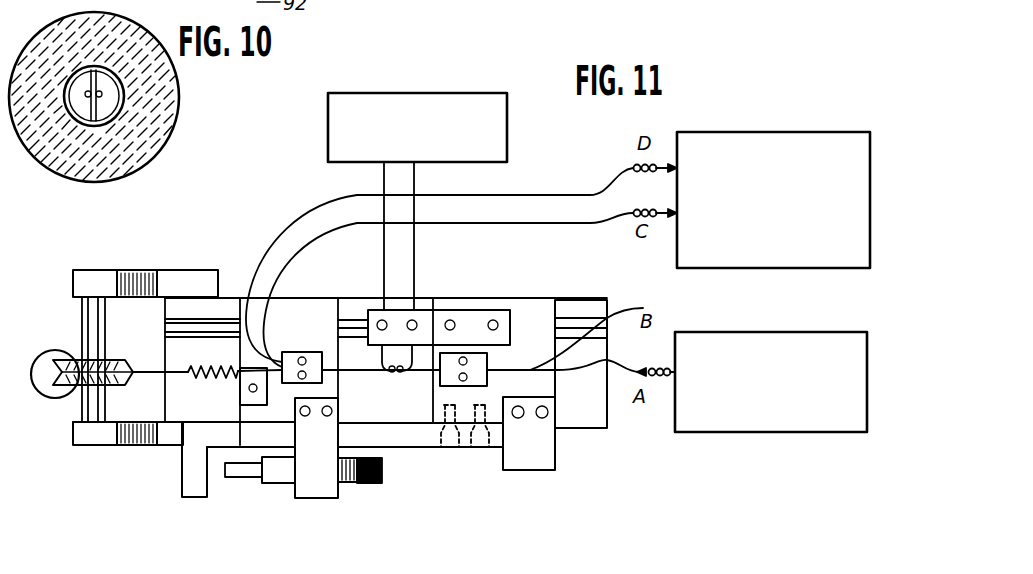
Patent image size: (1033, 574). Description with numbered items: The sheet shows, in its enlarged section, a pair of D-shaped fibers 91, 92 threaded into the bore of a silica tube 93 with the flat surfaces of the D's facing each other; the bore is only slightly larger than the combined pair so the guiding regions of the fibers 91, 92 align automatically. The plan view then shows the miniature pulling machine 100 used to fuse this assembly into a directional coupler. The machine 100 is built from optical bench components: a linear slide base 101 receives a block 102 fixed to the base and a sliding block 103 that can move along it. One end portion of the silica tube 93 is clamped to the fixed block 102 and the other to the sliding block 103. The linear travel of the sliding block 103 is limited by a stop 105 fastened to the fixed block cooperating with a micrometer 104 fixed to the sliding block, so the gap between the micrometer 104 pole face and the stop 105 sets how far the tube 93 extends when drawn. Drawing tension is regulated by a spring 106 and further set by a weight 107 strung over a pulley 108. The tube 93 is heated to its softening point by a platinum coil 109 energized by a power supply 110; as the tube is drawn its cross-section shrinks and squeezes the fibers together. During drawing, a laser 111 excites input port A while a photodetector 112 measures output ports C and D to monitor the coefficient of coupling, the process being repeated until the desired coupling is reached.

In FIG. 10, the fiber 91 is at (112, 100).
In FIG. 10, the fiber 92 is at (82, 110).
In FIG. 10, the silica tube 93 is at (167, 100).
In FIG. 11, the silica tube 93 is at (367, 372).
In FIG. 11, the miniature pulling machine 100 is at (552, 487).
In FIG. 11, the linear slide base 101 is at (610, 280).
In FIG. 11, the block 102 is at (537, 307).
In FIG. 11, the sliding block 103 is at (323, 312).
In FIG. 11, the micrometer 104 is at (285, 483).
In FIG. 11, the stop 105 is at (210, 487).
In FIG. 11, the spring 106 is at (203, 375).
In FIG. 11, the weight 107 is at (42, 394).
In FIG. 11, the pulley 108 is at (93, 363).
In FIG. 11, the platinum coil 109 is at (427, 300).
In FIG. 11, the power supply 110 is at (507, 140).
In FIG. 11, the laser 111 is at (728, 432).
In FIG. 11, the photodetector 112 is at (728, 270).